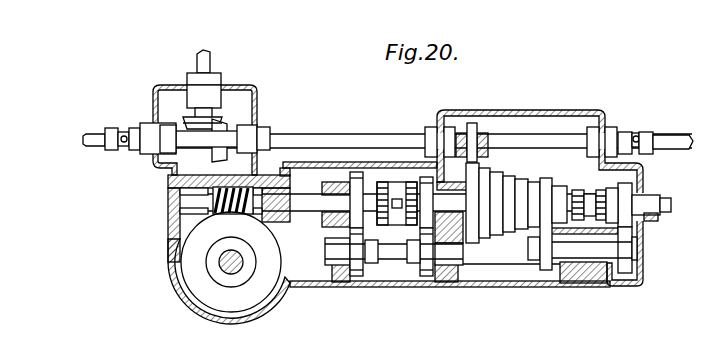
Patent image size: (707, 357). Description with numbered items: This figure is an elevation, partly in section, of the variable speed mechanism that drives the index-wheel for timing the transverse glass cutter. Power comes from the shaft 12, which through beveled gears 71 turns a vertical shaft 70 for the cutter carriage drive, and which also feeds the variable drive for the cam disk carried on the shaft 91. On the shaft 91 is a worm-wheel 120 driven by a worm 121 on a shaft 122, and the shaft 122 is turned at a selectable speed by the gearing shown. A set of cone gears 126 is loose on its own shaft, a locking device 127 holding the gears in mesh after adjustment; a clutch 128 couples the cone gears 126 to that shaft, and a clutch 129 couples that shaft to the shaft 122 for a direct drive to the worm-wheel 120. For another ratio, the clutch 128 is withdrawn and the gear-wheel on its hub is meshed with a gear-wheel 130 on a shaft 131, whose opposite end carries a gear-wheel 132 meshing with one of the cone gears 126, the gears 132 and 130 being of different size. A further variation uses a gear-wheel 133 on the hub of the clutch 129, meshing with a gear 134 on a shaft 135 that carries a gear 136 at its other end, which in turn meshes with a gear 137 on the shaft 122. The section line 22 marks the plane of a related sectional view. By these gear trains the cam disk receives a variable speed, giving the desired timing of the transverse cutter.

The shaft 12 is at (98, 131).
The section line 22 is at (553, 165).
The vertical shaft 70 is at (212, 61).
The beveled gears 71 is at (229, 130).
The shaft 91 is at (221, 270).
The worm-wheel 120 is at (194, 257).
The worm 121 is at (177, 212).
The shaft 122 is at (213, 200).
The cone gears 126 is at (487, 242).
The locking device 127 is at (585, 198).
The clutch 128 is at (599, 192).
The clutch 129 is at (415, 221).
The gear-wheel 130 is at (626, 247).
The shaft 131 is at (571, 250).
The gear-wheel 132 is at (546, 266).
The gear-wheel 133 is at (424, 177).
The gear 134 is at (423, 278).
The shaft 135 is at (392, 261).
The gear 136 is at (357, 278).
The gear 137 is at (354, 171).